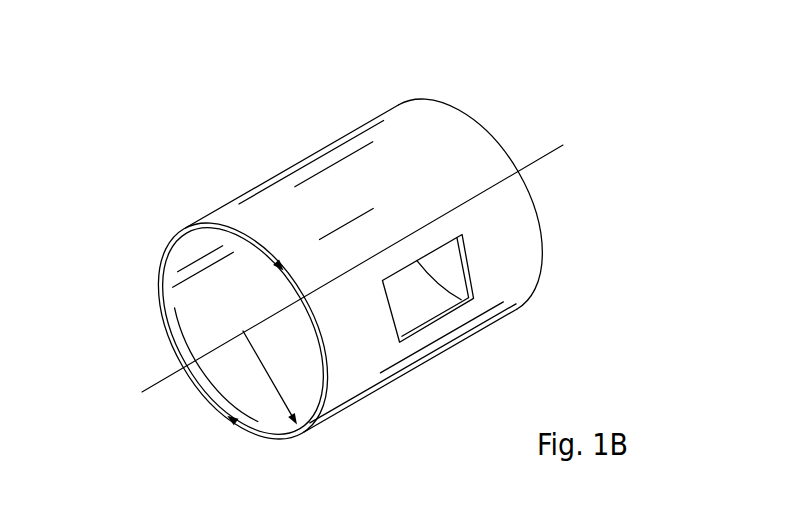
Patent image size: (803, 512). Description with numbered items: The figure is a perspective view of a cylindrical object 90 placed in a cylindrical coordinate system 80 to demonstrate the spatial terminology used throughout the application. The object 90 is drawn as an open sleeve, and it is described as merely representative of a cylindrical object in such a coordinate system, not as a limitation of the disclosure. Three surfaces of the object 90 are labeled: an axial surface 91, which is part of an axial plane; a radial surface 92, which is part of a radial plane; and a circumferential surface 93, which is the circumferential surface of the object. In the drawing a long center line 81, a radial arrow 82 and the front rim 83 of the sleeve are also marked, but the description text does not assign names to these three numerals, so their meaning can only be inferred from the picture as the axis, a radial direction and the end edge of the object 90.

The cylindrical coordinate system 80 is at (492, 113).
The central axis 81 is at (153, 390).
The radius 82 is at (278, 383).
The front rim 83 is at (165, 250).
The object 90 is at (383, 103).
The axial surface 91 is at (448, 305).
The radial surface 92 is at (257, 430).
The circumferential surface 93 is at (333, 183).